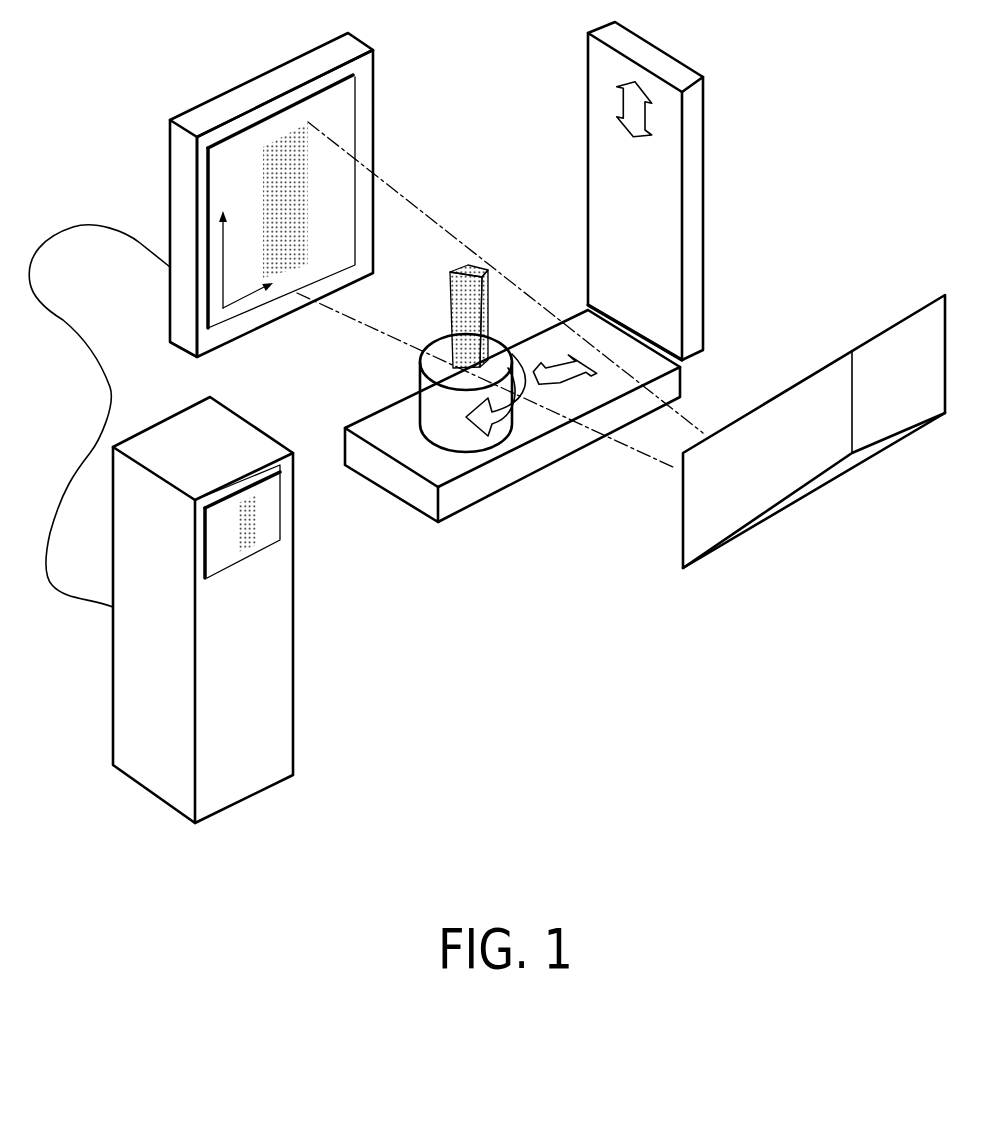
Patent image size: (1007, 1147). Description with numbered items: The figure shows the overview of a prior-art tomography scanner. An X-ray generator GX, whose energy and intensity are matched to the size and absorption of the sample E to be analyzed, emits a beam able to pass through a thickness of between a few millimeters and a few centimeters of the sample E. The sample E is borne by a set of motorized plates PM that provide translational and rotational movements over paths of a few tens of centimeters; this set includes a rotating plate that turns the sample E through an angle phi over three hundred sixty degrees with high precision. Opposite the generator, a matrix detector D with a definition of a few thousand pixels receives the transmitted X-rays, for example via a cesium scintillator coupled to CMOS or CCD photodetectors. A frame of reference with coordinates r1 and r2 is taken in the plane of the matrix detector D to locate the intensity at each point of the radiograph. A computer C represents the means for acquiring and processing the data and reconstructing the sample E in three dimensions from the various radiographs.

The matrix detector D is at (246, 195).
The motorized plates PM is at (700, 163).
The sample E is at (455, 297).
The X-ray generator GX is at (690, 535).
The computer C is at (272, 592).
The first frame-of-reference coordinate r1 is at (257, 291).
The second frame-of-reference coordinate r2 is at (224, 250).